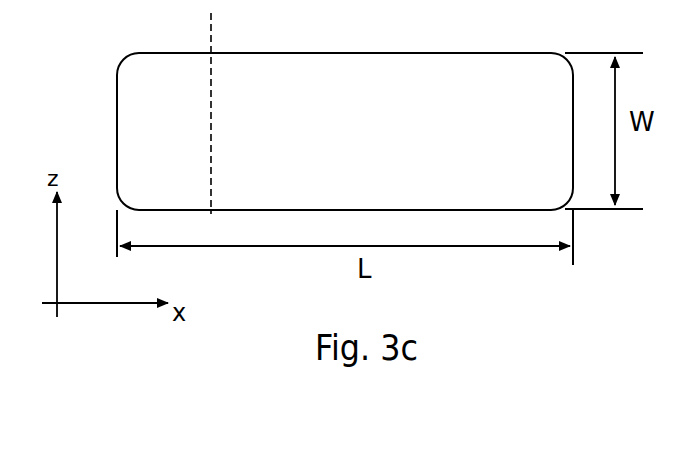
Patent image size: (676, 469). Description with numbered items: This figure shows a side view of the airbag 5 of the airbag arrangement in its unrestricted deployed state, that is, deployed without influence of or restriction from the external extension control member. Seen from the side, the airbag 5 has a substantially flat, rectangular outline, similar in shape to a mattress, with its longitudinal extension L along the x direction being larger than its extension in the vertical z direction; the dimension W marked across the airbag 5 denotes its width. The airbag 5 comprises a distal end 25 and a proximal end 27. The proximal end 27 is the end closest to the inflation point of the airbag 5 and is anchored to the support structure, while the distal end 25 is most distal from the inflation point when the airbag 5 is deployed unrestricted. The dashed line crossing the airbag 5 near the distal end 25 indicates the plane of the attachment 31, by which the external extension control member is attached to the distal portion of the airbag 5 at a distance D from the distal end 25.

The airbag 5 is at (453, 75).
The distal end 25 is at (117, 110).
The proximal end 27 is at (572, 125).
The attachment 31 is at (231, 113).